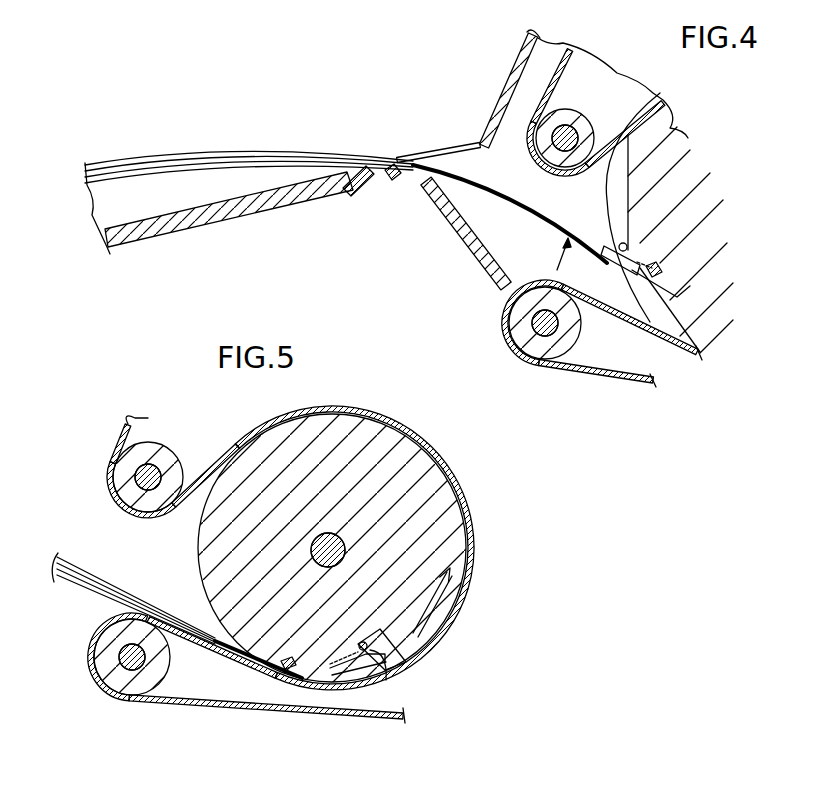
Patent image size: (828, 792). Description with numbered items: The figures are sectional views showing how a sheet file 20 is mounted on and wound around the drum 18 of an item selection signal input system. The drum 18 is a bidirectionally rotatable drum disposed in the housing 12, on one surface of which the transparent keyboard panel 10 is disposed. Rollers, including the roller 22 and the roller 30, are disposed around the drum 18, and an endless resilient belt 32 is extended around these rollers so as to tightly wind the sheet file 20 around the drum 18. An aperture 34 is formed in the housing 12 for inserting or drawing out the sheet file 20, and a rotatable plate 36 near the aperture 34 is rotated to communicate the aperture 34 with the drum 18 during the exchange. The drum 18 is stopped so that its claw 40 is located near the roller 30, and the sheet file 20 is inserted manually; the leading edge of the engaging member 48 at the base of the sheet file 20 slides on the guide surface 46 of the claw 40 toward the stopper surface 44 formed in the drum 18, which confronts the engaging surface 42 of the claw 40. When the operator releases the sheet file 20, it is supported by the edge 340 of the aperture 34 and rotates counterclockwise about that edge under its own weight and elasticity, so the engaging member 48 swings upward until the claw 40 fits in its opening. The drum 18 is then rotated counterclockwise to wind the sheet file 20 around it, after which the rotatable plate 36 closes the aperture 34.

In FIG. 4, the transparent keyboard panel 10 is at (208, 230).
In FIG. 4, the housing 12 is at (512, 62).
In FIG. 4, the drum 18 is at (678, 134).
In FIG. 5, the drum 18 is at (415, 449).
In FIG. 4, the sheet file 20 is at (342, 146).
In FIG. 5, the sheet file 20 is at (96, 570).
In FIG. 4, the roller 22 is at (578, 120).
In FIG. 5, the roller 22 is at (150, 457).
In FIG. 4, the roller 30 is at (520, 337).
In FIG. 5, the roller 30 is at (133, 682).
In FIG. 4, the endless resilient belt 32 is at (680, 356).
In FIG. 5, the endless resilient belt 32 is at (470, 497).
In FIG. 4, the aperture 34 is at (446, 152).
In FIG. 4, the rotatable plate 36 is at (450, 225).
In FIG. 4, the edge 340 is at (383, 182).
In FIG. 4, the claw 40 is at (662, 262).
In FIG. 5, the claw 40 is at (353, 655).
In FIG. 4, the engaging surface 42 is at (676, 300).
In FIG. 5, the engaging surface 42 is at (382, 684).
In FIG. 4, the stopper surface 44 is at (680, 330).
In FIG. 5, the stopper surface 44 is at (381, 640).
In FIG. 4, the guide surface 46 is at (640, 247).
In FIG. 5, the guide surface 46 is at (346, 668).
In FIG. 4, the engaging member 48 is at (623, 243).
In FIG. 5, the engaging member 48 is at (337, 657).